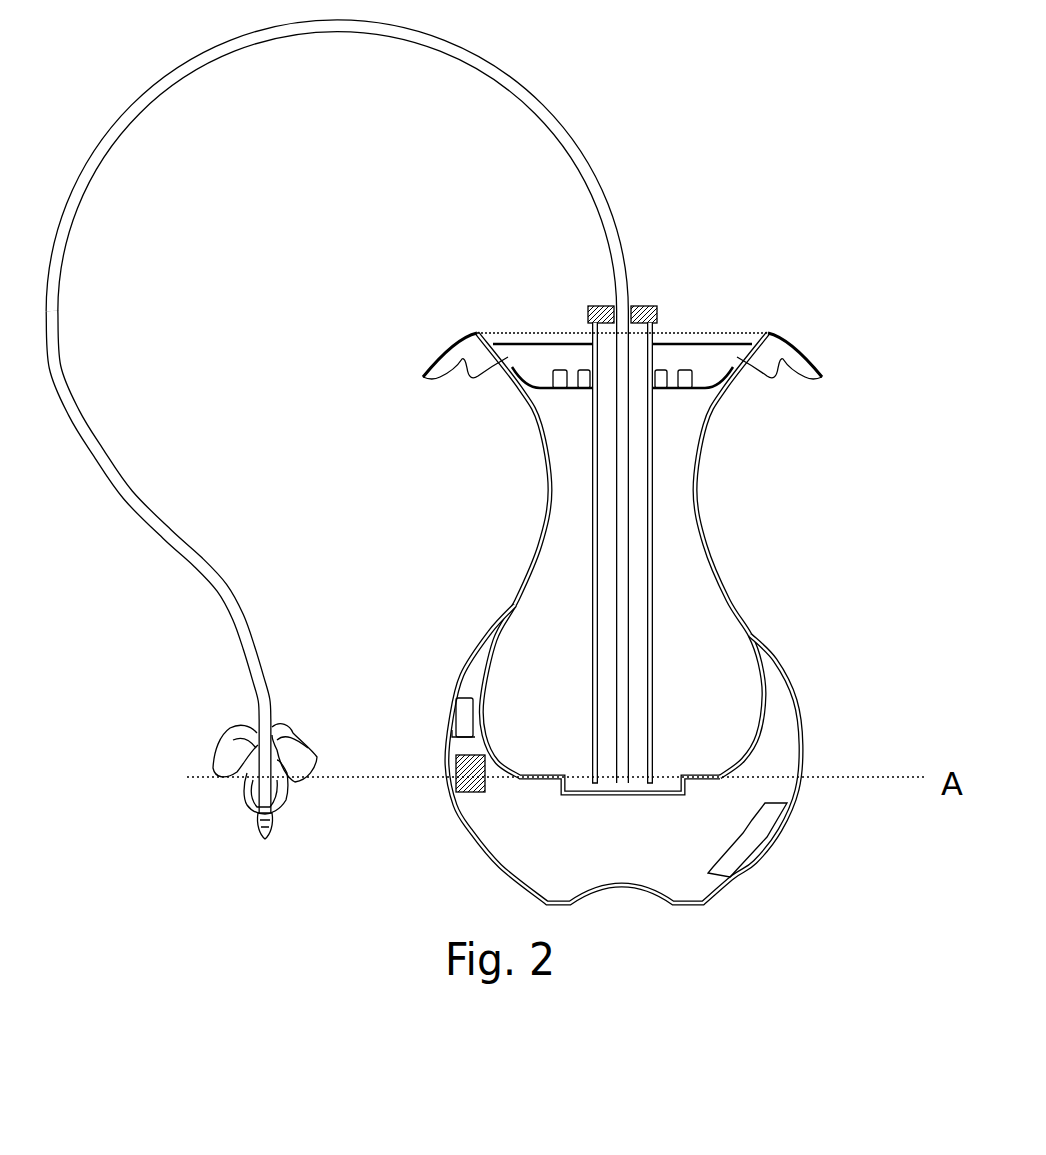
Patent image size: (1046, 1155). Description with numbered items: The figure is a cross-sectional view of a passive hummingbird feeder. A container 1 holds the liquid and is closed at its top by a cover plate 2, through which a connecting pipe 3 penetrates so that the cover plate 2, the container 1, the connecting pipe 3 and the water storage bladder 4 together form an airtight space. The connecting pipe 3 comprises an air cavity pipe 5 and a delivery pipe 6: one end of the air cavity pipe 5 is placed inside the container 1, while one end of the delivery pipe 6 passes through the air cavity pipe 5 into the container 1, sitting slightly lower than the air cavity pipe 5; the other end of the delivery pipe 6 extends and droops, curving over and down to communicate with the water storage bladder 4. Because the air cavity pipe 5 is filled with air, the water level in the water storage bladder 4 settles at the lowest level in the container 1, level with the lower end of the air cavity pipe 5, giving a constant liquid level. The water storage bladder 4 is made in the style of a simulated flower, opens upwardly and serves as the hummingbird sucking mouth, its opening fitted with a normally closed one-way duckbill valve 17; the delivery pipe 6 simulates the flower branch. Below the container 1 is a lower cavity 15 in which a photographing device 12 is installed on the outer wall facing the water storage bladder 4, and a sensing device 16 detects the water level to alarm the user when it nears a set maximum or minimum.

The container 1 is at (702, 683).
The cover plate 2 is at (693, 355).
The connecting pipe 3 is at (641, 310).
The water storage bladder 4 is at (227, 757).
The air cavity pipe 5 is at (642, 497).
The delivery pipe 6 is at (625, 552).
The photographing device 12 is at (460, 780).
The lower cavity 15 is at (527, 845).
The sensing device 16 is at (462, 718).
The one-way duckbill valve 17 is at (260, 813).